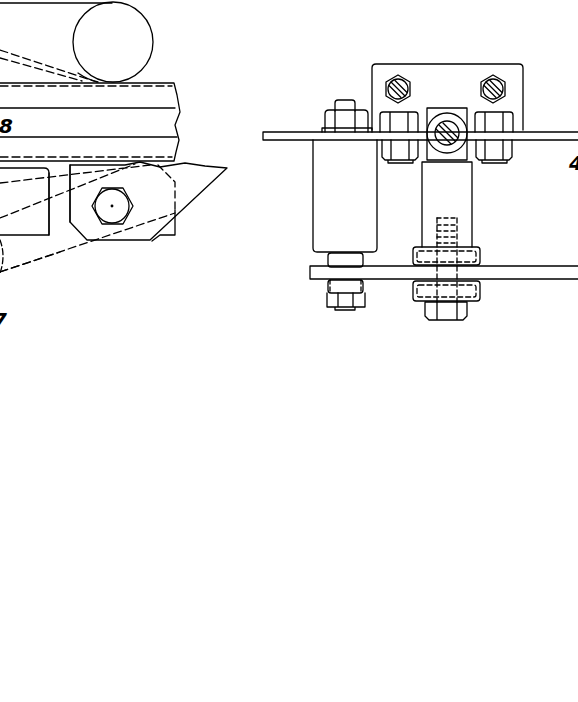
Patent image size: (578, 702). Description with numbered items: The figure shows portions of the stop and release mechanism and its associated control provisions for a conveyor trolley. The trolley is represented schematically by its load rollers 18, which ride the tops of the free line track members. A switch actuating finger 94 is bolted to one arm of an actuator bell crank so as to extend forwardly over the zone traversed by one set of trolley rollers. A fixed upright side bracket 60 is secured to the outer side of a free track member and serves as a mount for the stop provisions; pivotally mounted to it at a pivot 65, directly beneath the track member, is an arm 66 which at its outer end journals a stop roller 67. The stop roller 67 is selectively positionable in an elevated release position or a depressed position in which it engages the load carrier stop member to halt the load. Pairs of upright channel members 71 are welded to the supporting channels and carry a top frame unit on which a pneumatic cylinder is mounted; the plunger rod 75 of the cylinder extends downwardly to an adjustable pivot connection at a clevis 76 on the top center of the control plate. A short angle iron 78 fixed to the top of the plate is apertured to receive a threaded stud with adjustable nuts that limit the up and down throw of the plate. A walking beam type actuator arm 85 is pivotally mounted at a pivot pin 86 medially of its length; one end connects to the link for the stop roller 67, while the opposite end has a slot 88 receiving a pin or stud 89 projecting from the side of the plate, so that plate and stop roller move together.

In FIG. 8, the forward load rollers 18 is at (154, 36).
In FIG. 8, the switch actuating finger 94 is at (35, 62).
In FIG. 8, the fixed upright side bracket 60 is at (205, 177).
In FIG. 8, the pivot 65 is at (117, 215).
In FIG. 8, the arm 66 is at (58, 230).
In FIG. 8, the stop roller 67 is at (0, 285).
In FIG. 6, the upright channel members 71 is at (512, 60).
In FIG. 6, the plunger rod 75 is at (445, 127).
In FIG. 6, the clevis 76 is at (458, 145).
In FIG. 6, the angle iron 78 is at (515, 97).
In FIG. 6, the actuator arm 85 is at (405, 268).
In FIG. 6, the pivot pin 86 is at (462, 274).
In FIG. 6, the slot 88 is at (365, 267).
In FIG. 6, the pin or stud 89 is at (330, 285).